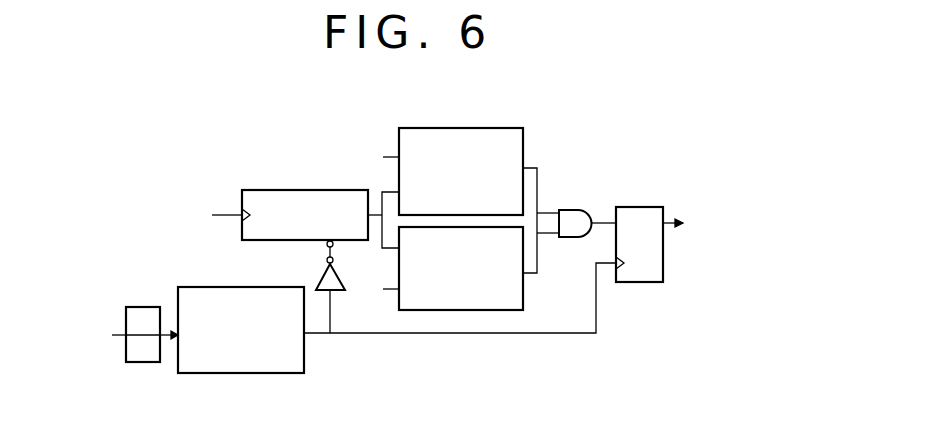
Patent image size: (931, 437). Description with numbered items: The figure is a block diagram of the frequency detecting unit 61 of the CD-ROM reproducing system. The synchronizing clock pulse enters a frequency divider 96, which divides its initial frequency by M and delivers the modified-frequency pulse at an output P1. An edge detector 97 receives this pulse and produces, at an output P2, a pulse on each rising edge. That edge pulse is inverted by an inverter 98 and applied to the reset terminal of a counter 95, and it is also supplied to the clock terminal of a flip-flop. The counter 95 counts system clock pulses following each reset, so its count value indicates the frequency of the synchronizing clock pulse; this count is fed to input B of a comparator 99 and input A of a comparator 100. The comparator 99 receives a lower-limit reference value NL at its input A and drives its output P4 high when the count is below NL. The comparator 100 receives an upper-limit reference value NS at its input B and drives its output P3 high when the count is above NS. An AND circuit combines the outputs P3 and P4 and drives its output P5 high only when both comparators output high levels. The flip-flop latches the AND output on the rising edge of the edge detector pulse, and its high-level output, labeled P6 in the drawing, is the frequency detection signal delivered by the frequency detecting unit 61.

The frequency detecting unit 61 is at (316, 125).
The counter 95 is at (272, 189).
The frequency divider 96 is at (141, 306).
The edge detector 97 is at (209, 287).
The inverter 98 is at (319, 276).
The comparator 99 is at (527, 136).
The comparator 100 is at (526, 293).
The output of frequency divider P1 is at (164, 338).
The output of edge detector P2 is at (319, 335).
The output of comparator 100 P3 is at (530, 274).
The output of comparator 99 P4 is at (537, 182).
The output of AND circuit P5 is at (581, 267).
The frequency detection signal P6 is at (668, 232).